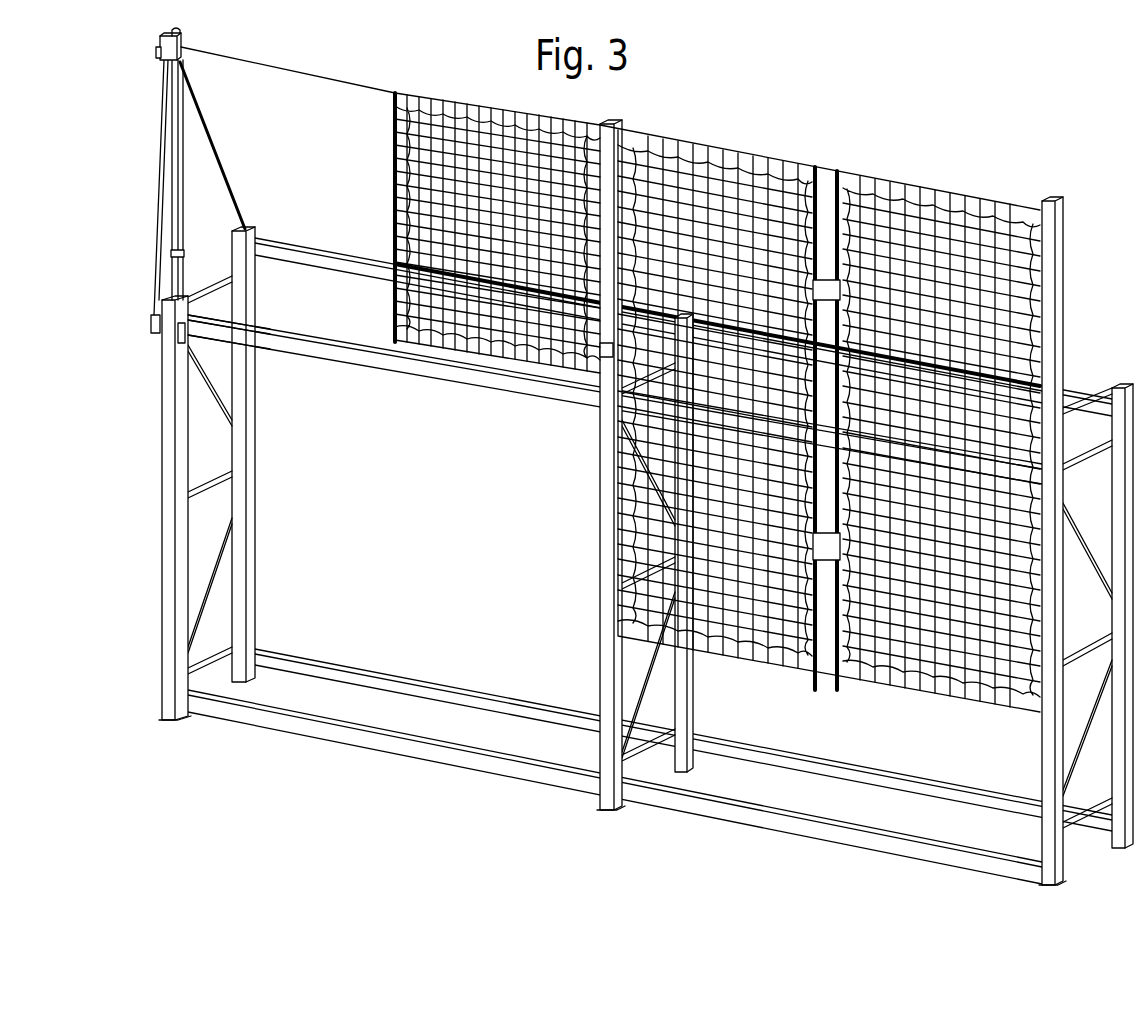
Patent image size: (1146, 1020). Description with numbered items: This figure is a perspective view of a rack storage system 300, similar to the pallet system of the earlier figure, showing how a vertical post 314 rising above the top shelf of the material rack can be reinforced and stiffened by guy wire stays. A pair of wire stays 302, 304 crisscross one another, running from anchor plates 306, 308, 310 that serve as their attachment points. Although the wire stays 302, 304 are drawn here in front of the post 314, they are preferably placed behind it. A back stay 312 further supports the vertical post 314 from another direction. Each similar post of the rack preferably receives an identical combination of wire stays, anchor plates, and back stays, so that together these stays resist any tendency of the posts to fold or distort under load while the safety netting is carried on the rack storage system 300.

The rack storage system 300 is at (872, 143).
The wire stay 302 is at (157, 240).
The wire stay 304 is at (178, 222).
The anchor plate 306 is at (158, 50).
The anchor plate 308 is at (150, 322).
The anchor plate 310 is at (215, 313).
The back stay 312 is at (214, 147).
The vertical post 314 is at (181, 33).